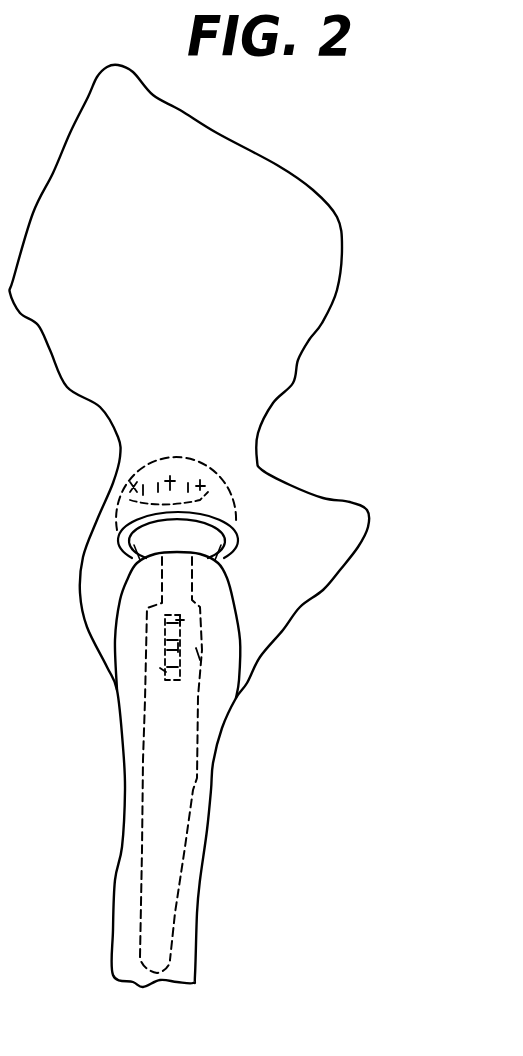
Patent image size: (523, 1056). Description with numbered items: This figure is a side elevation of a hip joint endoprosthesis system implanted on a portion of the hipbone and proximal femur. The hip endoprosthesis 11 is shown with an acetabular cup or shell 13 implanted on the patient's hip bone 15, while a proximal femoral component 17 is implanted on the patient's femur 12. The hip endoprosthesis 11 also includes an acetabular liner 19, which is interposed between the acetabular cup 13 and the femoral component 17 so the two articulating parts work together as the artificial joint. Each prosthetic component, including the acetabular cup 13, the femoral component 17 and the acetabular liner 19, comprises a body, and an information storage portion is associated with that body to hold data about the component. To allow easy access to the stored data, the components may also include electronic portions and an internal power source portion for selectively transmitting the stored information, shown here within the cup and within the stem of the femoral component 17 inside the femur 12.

The hip endoprosthesis 11 is at (143, 760).
The femur 12 is at (197, 778).
The acetabular cup 13 is at (235, 517).
The hip bone 15 is at (257, 478).
The proximal femoral component 17 is at (198, 543).
The acetabular liner 19 is at (128, 558).